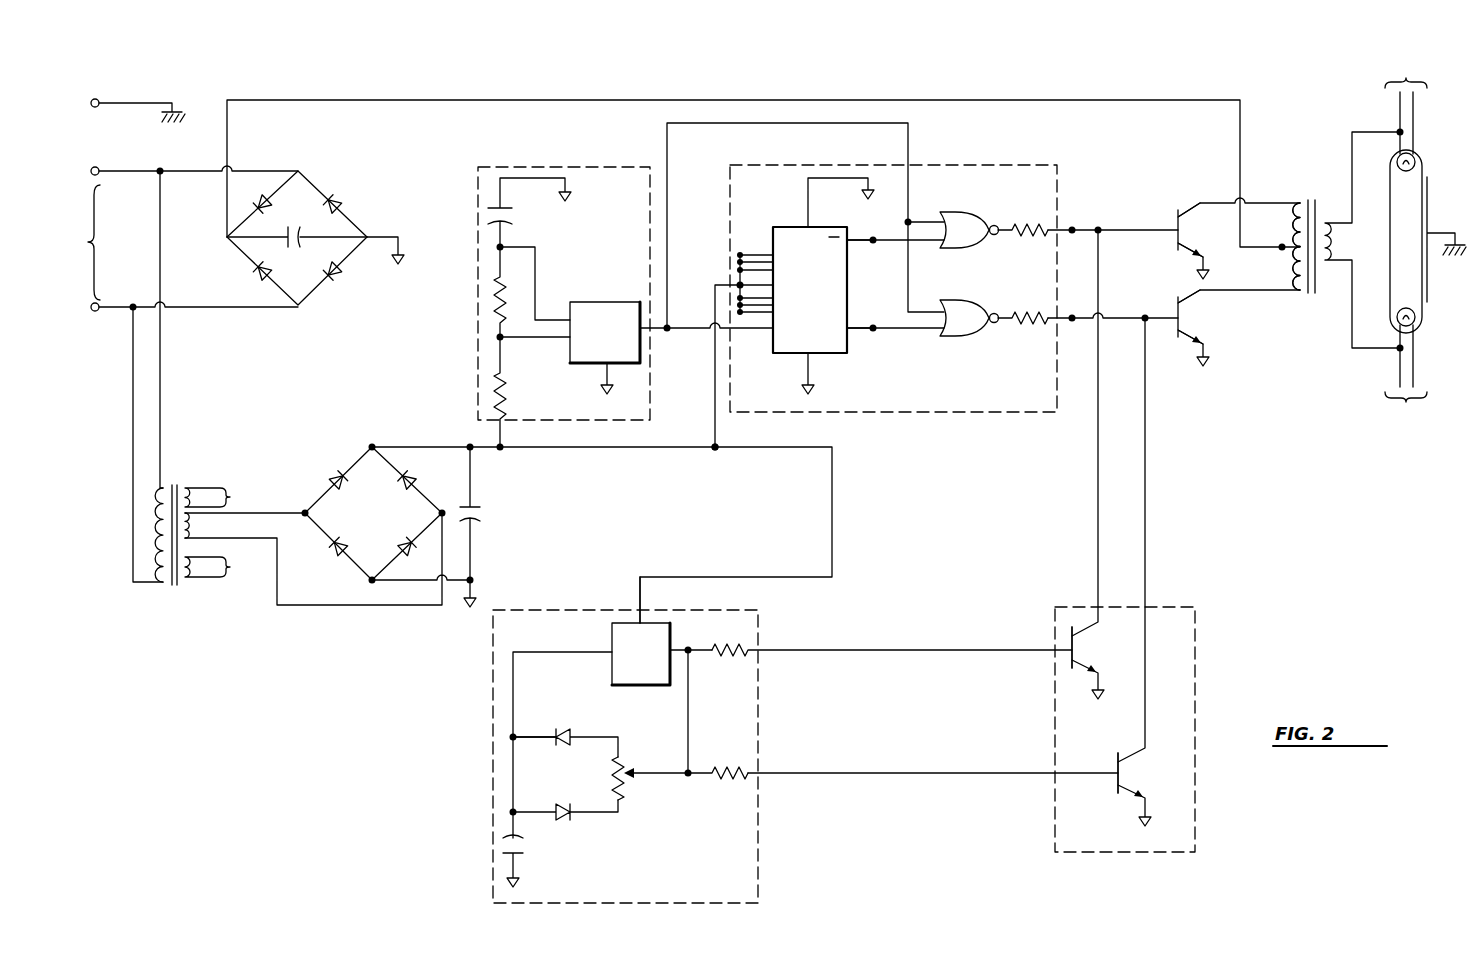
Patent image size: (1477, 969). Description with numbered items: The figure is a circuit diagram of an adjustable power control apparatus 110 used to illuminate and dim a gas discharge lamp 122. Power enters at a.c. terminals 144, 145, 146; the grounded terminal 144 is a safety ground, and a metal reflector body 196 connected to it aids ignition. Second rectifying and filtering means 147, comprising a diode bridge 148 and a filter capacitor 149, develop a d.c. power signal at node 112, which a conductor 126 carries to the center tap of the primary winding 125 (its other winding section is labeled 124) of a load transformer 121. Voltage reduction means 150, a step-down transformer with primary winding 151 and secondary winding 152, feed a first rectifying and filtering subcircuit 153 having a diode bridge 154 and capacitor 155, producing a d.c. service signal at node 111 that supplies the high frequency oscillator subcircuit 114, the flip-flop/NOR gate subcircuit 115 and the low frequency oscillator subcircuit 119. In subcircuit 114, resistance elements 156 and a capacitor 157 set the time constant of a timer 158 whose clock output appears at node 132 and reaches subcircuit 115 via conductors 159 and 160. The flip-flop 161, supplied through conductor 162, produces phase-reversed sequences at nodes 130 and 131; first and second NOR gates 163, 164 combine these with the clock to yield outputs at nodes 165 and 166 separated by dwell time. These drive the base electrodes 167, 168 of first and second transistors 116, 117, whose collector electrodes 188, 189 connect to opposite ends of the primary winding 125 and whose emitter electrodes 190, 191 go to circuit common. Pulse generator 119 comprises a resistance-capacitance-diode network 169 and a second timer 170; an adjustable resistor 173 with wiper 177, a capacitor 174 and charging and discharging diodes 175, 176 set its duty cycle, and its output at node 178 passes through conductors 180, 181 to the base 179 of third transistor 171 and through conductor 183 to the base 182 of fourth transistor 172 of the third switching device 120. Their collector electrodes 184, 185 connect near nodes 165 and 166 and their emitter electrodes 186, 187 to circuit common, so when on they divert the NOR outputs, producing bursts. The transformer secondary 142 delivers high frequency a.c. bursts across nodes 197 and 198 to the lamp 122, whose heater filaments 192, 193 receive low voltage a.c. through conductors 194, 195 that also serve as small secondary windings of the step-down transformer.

The adjustable power control apparatus 110 is at (1197, 468).
The node 111 is at (372, 447).
The node 112 is at (227, 248).
The high frequency oscillator subcircuit 114 is at (582, 167).
The flip-flop/NOR gate subcircuit 115 is at (985, 165).
The first transistor 116 is at (1182, 205).
The second transistor 117 is at (1180, 297).
The adjustable duty-cycle pulse generator 119 is at (758, 625).
The third switching device 120 is at (1195, 628).
The load transformer 121 is at (1316, 293).
The gas discharge lamp 122 is at (1420, 243).
The lower primary winding half 124 is at (1292, 258).
The primary winding 125 is at (1292, 212).
The conductor 126 is at (445, 102).
The node 130 is at (873, 248).
The node 131 is at (873, 333).
The node 132 is at (667, 332).
The load transformer secondary 142 is at (1332, 247).
The grounded terminal 144 is at (98, 99).
The hot terminal 145 is at (97, 167).
The hot terminal 146 is at (96, 311).
The second rectifying and filtering means 147 is at (326, 193).
The diode bridge 148 is at (325, 295).
The filter capacitor 149 is at (290, 250).
The voltage reduction means 150 is at (188, 585).
The primary winding 151 is at (157, 508).
The secondary winding 152 is at (188, 519).
The first rectifying and filtering subcircuit 153 is at (328, 490).
The diode bridge 154 is at (330, 525).
The capacitor 155 is at (498, 516).
The resistance elements 156 is at (492, 288).
The capacitor 157 is at (512, 220).
The timer integrated circuit 158 is at (595, 302).
The conductor 159 is at (667, 222).
The conductor 160 is at (710, 323).
The flip-flop device 161 is at (820, 299).
The conductor 162 is at (720, 443).
The first NOR gate 163 is at (968, 212).
The second NOR gate 164 is at (968, 300).
The node 165 is at (1074, 228).
The node 166 is at (1072, 316).
The base electrode 167 is at (1178, 236).
The base electrode 168 is at (1178, 318).
The adjustable resistance-capacitance-diode network 169 is at (478, 777).
The second timer integrated circuit 170 is at (612, 670).
The third transistor 171 is at (1070, 664).
The fourth transistor 172 is at (1118, 790).
The adjustable resistor 173 is at (628, 758).
The capacitor 174 is at (530, 850).
The first diode 175 is at (565, 745).
The second diode 176 is at (565, 803).
The wiper arm 177 is at (634, 777).
The node 178 is at (704, 772).
The base 179 is at (1068, 640).
The conductor 180 is at (692, 693).
The conductor 181 is at (876, 652).
The base 182 is at (1117, 770).
The conductor 183 is at (872, 773).
The collector electrode 184 is at (1090, 628).
The collector electrode 185 is at (1140, 752).
The emitter electrode 186 is at (1090, 667).
The emitter electrode 187 is at (1158, 786).
The collector electrode 188 is at (1192, 208).
The collector electrode 189 is at (1195, 296).
The emitter electrode 190 is at (1198, 252).
The emitter electrode 191 is at (1221, 328).
The first heater filament 192 is at (1426, 162).
The second heater filament 193 is at (1424, 316).
The electrical conductor 194 is at (806, 317).
The electrical conductor 195 is at (806, 416).
The metal reflector body 196 is at (1430, 240).
The node 197 is at (1398, 130).
The node 198 is at (1398, 350).